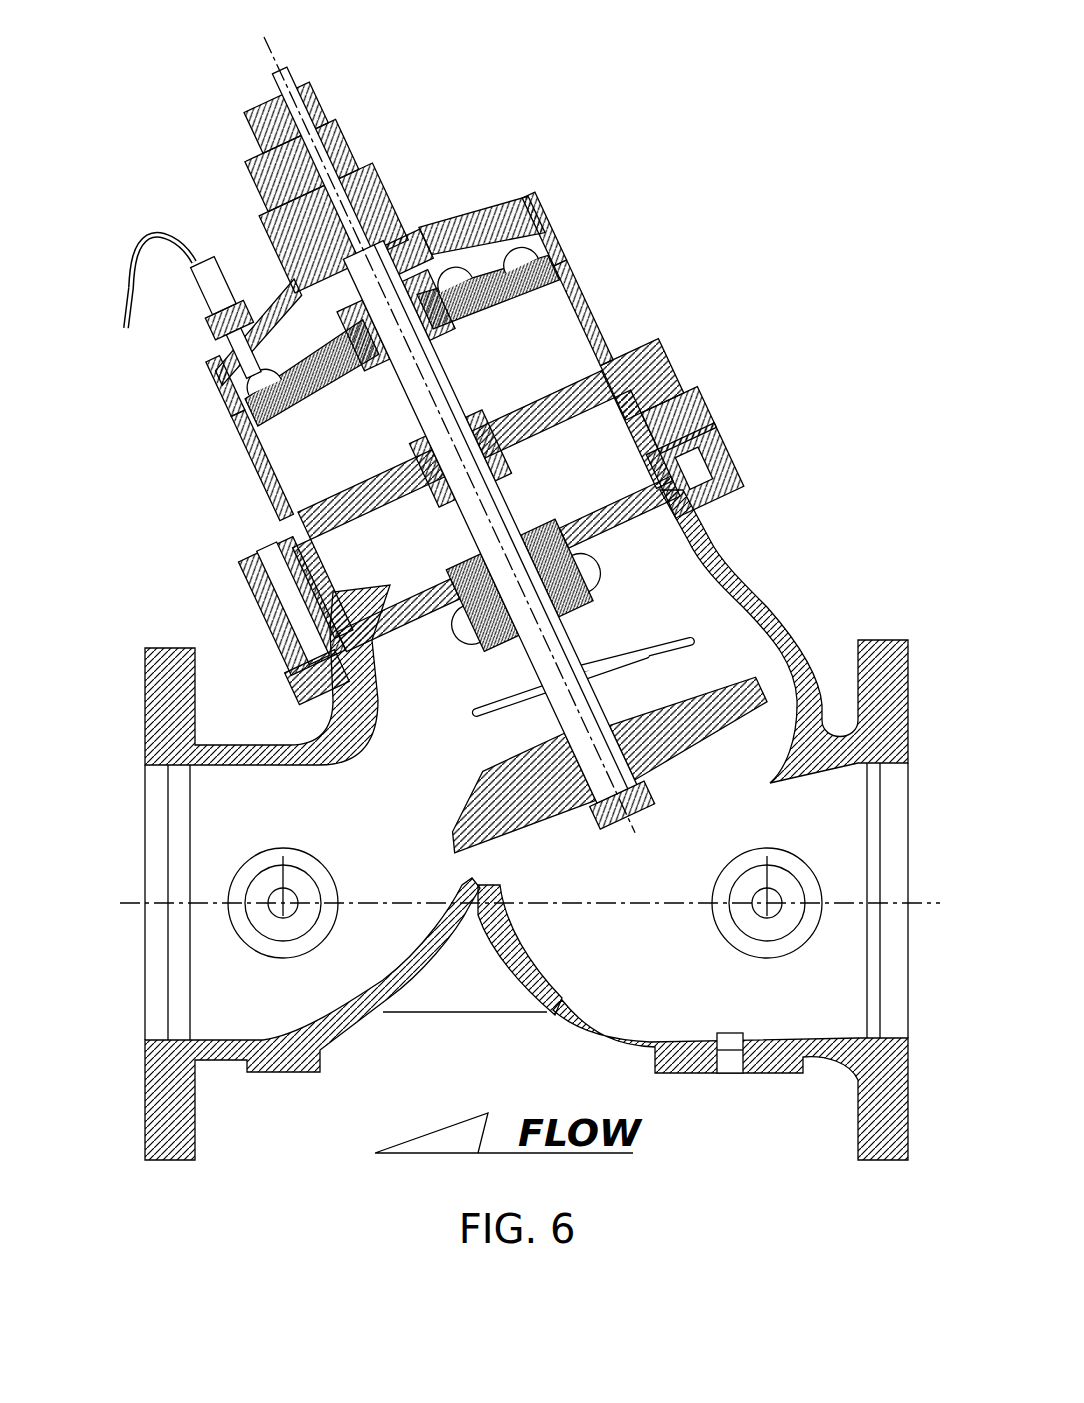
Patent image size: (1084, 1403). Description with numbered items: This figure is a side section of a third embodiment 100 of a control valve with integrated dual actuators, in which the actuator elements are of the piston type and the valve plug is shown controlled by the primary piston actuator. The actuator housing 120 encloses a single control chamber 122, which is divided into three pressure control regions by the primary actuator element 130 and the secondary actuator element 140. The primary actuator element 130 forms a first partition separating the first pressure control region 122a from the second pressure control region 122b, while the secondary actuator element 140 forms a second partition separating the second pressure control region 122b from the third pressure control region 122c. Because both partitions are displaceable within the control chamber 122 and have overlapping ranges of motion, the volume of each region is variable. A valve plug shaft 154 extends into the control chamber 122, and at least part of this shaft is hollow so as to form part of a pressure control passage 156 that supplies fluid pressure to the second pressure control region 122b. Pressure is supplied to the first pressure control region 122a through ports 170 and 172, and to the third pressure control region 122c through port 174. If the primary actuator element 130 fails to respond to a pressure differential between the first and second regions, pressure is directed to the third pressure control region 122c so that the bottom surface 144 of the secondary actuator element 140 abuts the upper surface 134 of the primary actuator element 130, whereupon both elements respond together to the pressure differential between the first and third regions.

The third preferred embodiment 100 is at (750, 75).
The actuator housing 120 is at (590, 265).
The control chamber 122 is at (487, 436).
The first pressure control region 122a is at (557, 460).
The second pressure control region 122b is at (527, 368).
The third pressure control region 122c is at (473, 270).
The primary actuator element 130 is at (707, 417).
The upper surface of the primary actuator element 134 is at (392, 457).
The secondary actuator element 140 is at (273, 373).
The bottom surface of the secondary actuator element 144 is at (500, 322).
The valve plug shaft 154 is at (610, 664).
The pressure control passage 156 is at (273, 217).
The port 170 is at (683, 387).
The port 172 is at (396, 622).
The port 174 is at (508, 207).